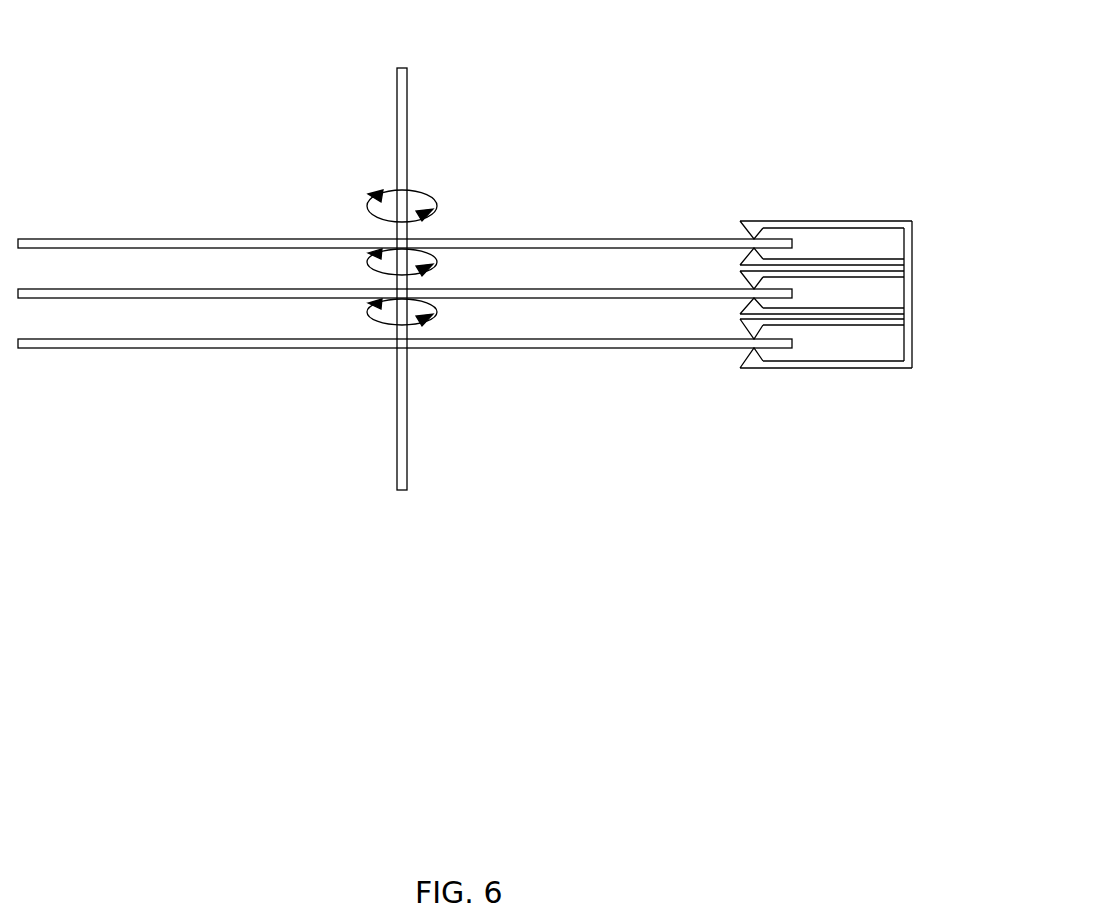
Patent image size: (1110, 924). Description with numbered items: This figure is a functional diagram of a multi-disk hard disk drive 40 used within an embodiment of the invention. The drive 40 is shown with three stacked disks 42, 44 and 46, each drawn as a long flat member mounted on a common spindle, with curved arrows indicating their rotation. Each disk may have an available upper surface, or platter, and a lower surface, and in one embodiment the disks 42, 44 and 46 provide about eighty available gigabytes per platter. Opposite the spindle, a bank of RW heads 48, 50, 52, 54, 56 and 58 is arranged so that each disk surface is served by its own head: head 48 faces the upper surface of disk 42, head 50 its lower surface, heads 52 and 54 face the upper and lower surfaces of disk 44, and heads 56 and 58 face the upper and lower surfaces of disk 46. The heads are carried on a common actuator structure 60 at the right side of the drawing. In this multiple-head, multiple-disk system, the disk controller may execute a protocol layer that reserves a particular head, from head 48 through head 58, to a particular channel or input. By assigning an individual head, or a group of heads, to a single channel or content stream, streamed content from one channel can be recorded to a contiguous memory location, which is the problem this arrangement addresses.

The multi-disk hard disk drive 40 is at (684, 69).
The disk 42 is at (258, 239).
The disk 44 is at (615, 289).
The disk 46 is at (550, 339).
The RW head 48 is at (740, 221).
The RW head 50 is at (740, 265).
The RW head 52 is at (783, 277).
The RW head 54 is at (740, 314).
The RW head 56 is at (790, 325).
The RW head 58 is at (745, 368).
The housing 60 is at (912, 221).